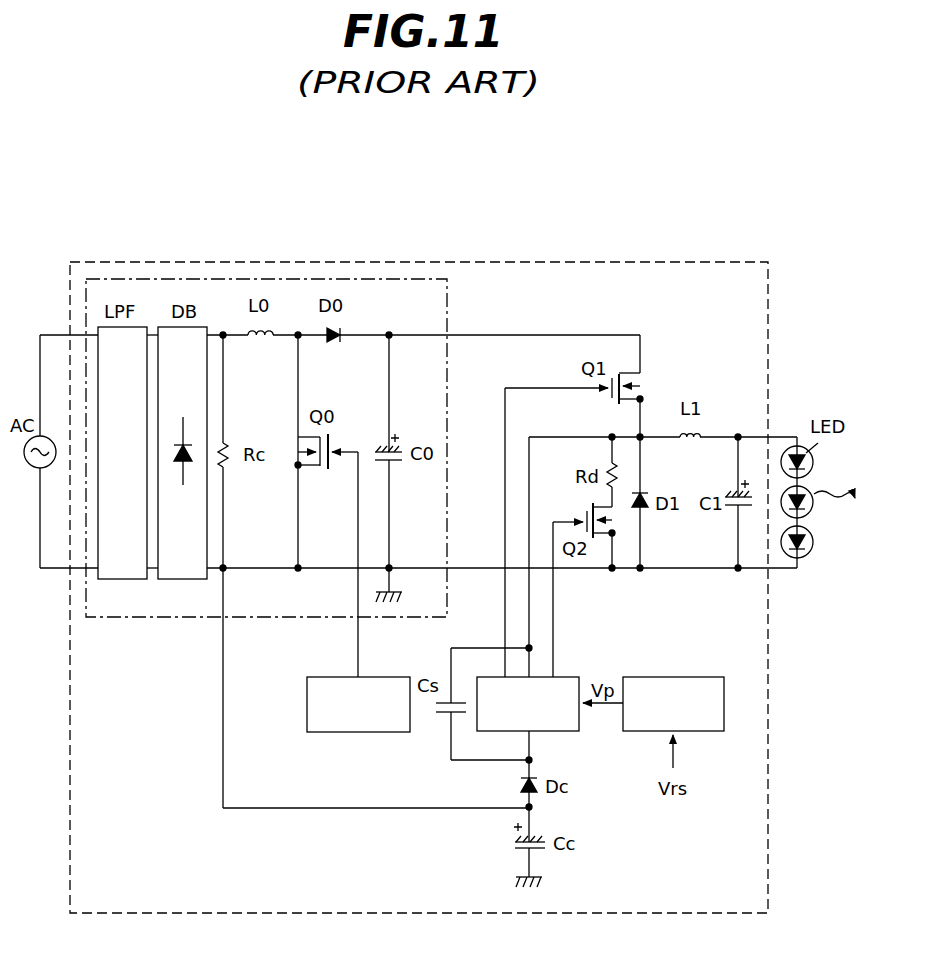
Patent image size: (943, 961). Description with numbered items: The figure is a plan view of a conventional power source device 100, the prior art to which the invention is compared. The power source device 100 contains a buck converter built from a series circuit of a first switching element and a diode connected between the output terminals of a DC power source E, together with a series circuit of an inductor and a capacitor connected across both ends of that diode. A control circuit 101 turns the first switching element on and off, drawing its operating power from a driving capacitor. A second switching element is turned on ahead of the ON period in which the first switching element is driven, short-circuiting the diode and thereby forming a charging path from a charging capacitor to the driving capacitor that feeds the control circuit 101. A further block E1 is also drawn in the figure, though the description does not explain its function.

The power source device 100 is at (662, 262).
The control circuit 101 is at (570, 676).
The DC power source E is at (152, 618).
The driver block E1 is at (358, 733).